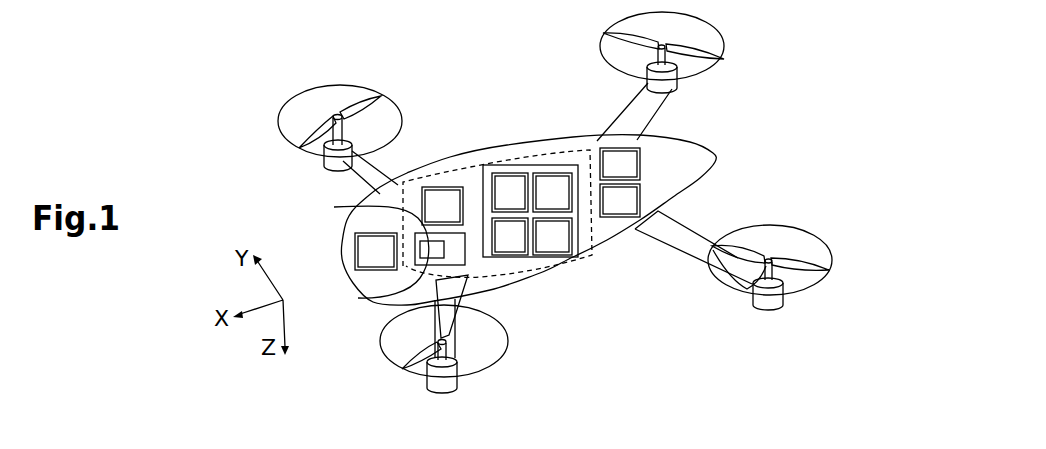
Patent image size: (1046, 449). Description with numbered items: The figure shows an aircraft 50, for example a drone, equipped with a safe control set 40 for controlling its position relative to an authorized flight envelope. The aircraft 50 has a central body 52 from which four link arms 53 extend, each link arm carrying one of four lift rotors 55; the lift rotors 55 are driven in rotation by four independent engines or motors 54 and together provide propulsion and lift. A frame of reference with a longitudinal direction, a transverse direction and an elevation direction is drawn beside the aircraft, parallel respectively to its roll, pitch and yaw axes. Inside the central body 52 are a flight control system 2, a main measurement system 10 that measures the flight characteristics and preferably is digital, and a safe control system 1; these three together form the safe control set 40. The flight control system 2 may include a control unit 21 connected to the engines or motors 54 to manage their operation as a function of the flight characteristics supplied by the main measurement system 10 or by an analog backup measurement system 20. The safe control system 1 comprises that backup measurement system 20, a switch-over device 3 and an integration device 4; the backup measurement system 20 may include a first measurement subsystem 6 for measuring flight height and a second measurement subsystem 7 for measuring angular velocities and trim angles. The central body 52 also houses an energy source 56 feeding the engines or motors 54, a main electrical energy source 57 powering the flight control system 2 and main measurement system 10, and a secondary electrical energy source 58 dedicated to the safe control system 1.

The safe control system 1 is at (521, 167).
The flight control system 2 is at (373, 246).
The switch-over device 3 is at (517, 247).
The integration device 4 is at (559, 247).
The first measurement subsystem 6 is at (517, 203).
The second measurement subsystem 7 is at (559, 203).
The main measurement system 10 is at (456, 216).
The analog backup measurement system 20 is at (556, 172).
The control unit 21 is at (428, 253).
The safe control set 40 is at (588, 160).
The aircraft 50 is at (598, 298).
The central body 52 is at (458, 163).
The link arms 53 is at (383, 178).
The engines or motors 54 is at (325, 162).
The lift rotors 55 is at (309, 93).
The energy source 56 is at (389, 262).
The main electrical energy source 57 is at (633, 175).
The secondary electrical energy source 58 is at (633, 211).